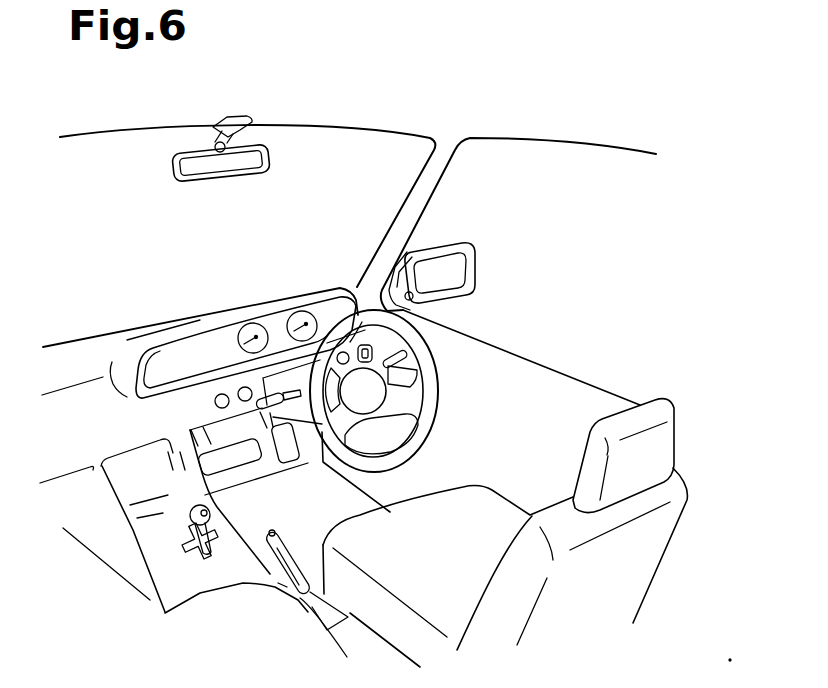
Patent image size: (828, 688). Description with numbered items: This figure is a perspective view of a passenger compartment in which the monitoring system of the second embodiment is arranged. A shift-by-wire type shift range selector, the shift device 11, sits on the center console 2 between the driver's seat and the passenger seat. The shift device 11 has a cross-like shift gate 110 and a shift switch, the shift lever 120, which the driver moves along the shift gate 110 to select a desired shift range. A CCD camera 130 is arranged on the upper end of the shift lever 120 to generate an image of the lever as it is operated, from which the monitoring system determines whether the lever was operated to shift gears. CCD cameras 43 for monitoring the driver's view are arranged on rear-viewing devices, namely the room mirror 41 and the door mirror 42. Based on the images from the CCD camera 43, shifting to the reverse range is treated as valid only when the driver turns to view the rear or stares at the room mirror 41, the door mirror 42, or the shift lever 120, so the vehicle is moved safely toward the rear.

The center console 2 is at (247, 577).
The shift device 11 is at (175, 482).
The room mirror 41 is at (177, 186).
The door mirror 42 is at (460, 245).
The CCD camera 43 is at (214, 147).
The shift gate 110 is at (195, 552).
The shift lever 120 is at (213, 519).
The CCD camera 130 is at (253, 456).